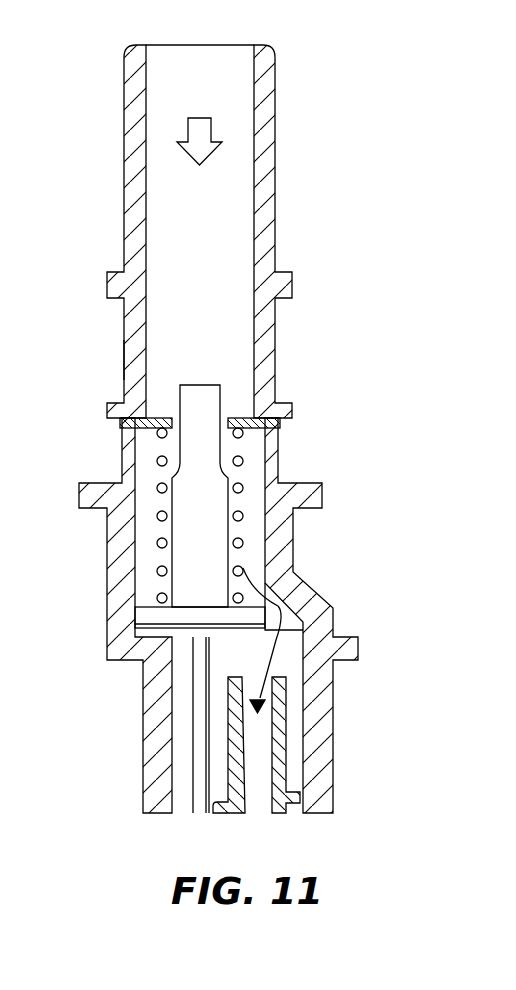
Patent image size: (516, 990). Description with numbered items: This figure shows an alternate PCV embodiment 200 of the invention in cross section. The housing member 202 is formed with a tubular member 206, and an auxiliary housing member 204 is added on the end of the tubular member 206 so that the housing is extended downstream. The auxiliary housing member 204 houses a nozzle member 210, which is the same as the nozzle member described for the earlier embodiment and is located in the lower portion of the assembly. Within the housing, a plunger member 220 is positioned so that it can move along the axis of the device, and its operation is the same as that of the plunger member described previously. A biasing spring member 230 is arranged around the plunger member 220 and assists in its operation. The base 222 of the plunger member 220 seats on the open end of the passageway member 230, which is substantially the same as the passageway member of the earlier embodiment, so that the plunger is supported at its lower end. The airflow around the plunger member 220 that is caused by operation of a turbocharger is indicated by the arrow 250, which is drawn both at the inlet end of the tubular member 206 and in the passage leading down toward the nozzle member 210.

The PCV embodiment 200 is at (343, 98).
The housing member 202 is at (277, 159).
The auxiliary housing member 204 is at (157, 772).
The tubular member 206 is at (126, 363).
The nozzle member 210 is at (278, 792).
The plunger member 220 is at (187, 538).
The base of the plunger member 222 is at (136, 621).
The biasing spring member 230 is at (160, 599).
The arrow indicating airflow 250 is at (190, 155).